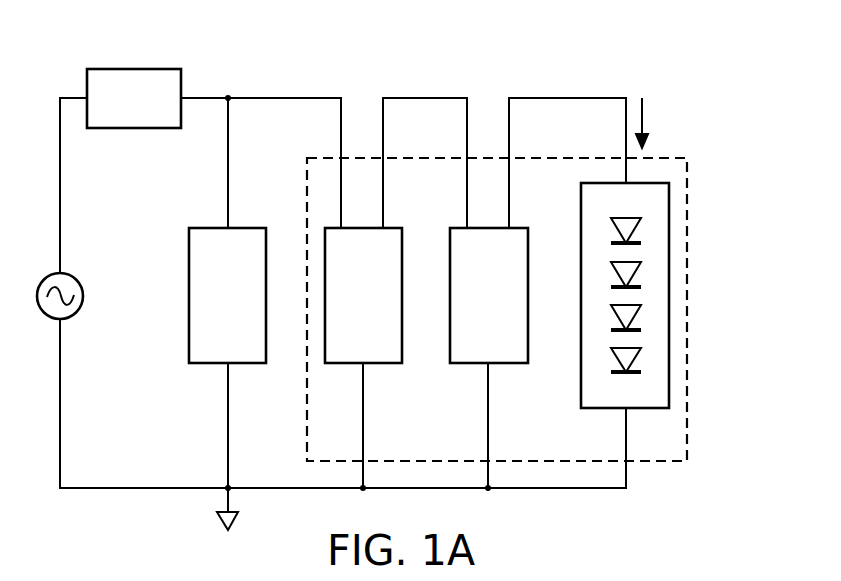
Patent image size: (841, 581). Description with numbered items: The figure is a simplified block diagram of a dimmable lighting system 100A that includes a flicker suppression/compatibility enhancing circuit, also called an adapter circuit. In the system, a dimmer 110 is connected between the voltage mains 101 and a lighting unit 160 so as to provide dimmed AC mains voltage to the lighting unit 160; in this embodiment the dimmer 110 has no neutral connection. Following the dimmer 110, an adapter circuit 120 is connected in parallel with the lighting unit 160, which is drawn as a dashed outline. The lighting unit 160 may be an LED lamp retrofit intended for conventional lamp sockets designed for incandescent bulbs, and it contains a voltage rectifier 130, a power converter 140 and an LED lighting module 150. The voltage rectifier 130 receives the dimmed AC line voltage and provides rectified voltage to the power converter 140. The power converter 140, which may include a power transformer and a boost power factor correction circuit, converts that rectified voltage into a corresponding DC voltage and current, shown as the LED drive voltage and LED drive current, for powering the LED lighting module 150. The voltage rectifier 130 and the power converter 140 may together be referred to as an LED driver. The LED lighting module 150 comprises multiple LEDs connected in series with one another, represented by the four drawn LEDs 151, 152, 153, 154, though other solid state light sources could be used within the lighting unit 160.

The dimmable lighting system 100A is at (640, 61).
The voltage mains 101 is at (77, 281).
The dimmer 110 is at (140, 68).
The adapter circuit 120 is at (250, 364).
The voltage rectifier 130 is at (384, 364).
The power converter 140 is at (511, 364).
The LED lighting module 150 is at (670, 193).
The LED 151 is at (641, 228).
The LED 152 is at (641, 272).
The LED 153 is at (641, 315).
The LED 154 is at (641, 358).
The lighting unit 160 is at (660, 463).